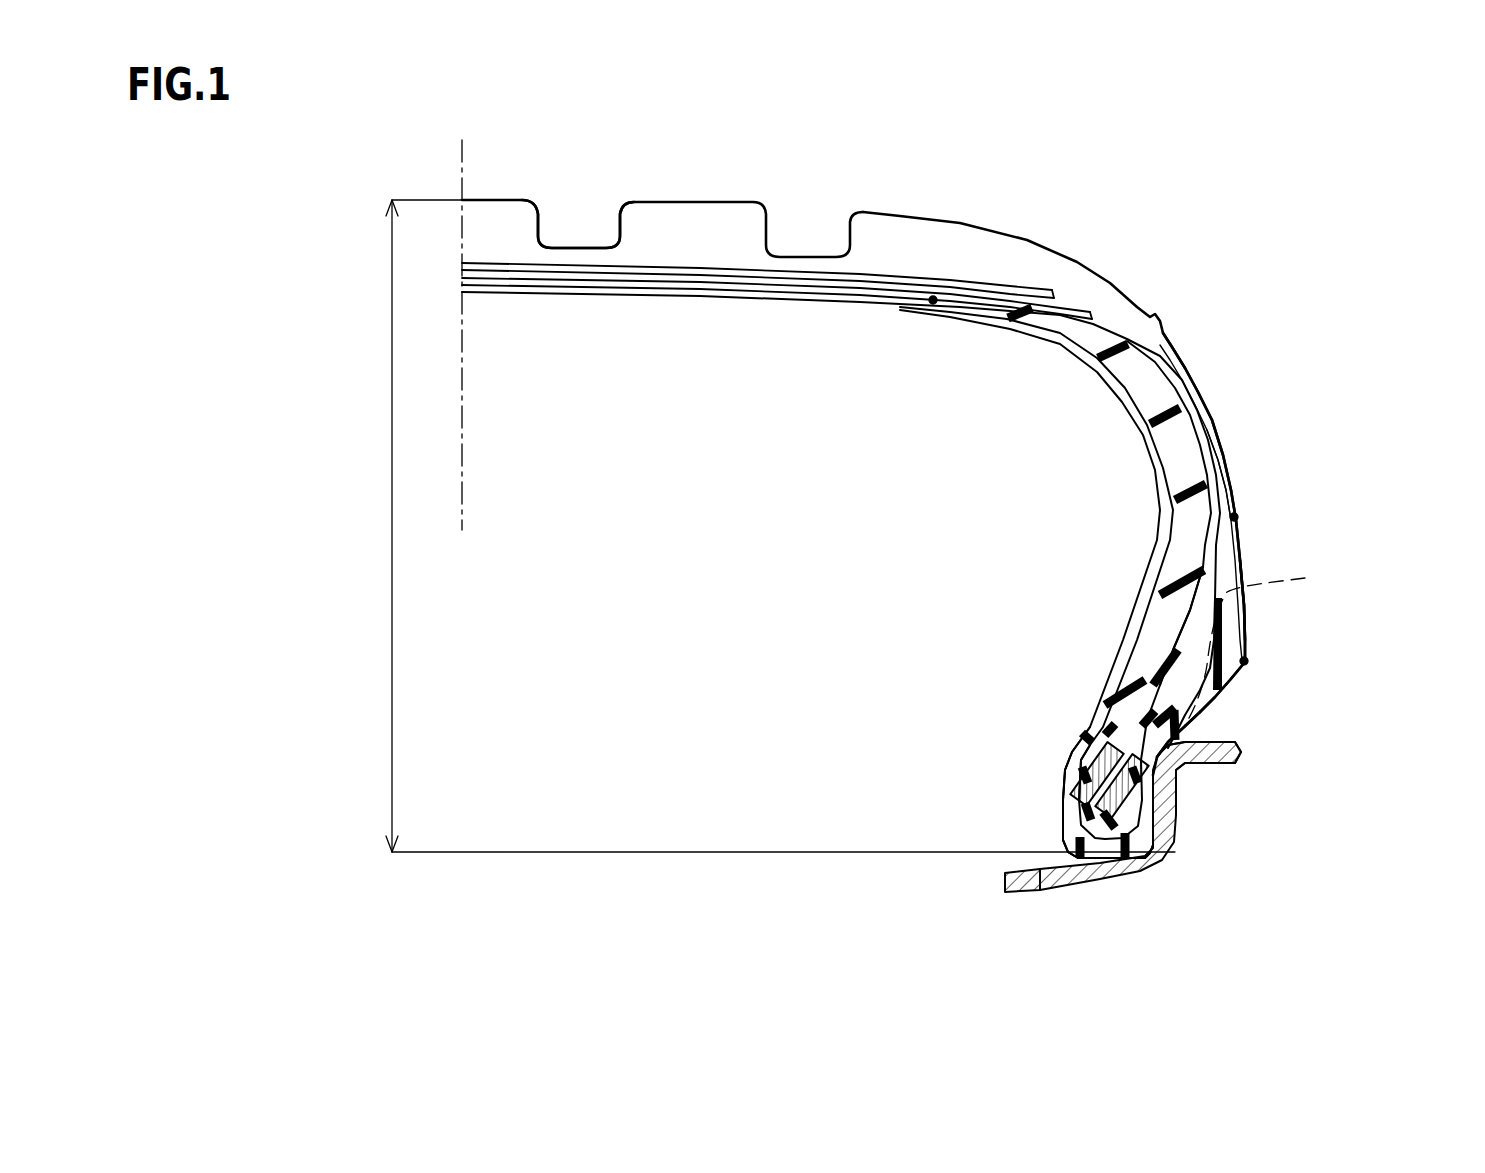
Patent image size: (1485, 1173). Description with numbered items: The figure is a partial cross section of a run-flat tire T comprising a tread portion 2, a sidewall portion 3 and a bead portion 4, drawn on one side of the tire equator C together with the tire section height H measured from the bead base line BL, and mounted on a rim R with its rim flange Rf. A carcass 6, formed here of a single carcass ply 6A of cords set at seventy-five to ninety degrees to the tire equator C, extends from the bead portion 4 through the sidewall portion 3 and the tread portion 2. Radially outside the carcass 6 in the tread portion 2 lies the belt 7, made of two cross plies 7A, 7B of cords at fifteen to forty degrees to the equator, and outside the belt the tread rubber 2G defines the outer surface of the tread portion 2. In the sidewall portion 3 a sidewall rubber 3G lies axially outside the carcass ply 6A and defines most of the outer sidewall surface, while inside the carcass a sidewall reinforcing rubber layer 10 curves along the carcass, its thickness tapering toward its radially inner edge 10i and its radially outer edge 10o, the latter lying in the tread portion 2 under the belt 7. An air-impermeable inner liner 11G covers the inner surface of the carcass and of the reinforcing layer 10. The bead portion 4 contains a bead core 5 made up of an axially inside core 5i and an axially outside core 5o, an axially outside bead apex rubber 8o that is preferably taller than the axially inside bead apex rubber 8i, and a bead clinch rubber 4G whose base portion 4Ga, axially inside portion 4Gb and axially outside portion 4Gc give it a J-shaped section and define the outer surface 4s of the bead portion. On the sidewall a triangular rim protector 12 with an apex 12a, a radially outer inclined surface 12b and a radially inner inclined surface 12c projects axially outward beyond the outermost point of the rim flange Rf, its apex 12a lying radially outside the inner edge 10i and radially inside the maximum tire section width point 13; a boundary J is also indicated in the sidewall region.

The run-flat tire T is at (1197, 180).
The tread portion 2 is at (735, 200).
The tread rubber 2G is at (497, 218).
The sidewall portion 3 is at (1293, 418).
The sidewall rubber 3G is at (1222, 477).
The bead portion 4 is at (997, 678).
The bead clinch rubber 4G is at (1116, 871).
The base portion 4Ga is at (1100, 850).
The axially inside portion 4Gb is at (1010, 868).
The axially outside portion 4Gc is at (1188, 859).
The outer surface of the bead portion 4s is at (1198, 728).
The bead core 5 is at (1126, 785).
The axially inside core 5i is at (1075, 795).
The axially outside core 5o is at (1140, 785).
The carcass 6 is at (909, 565).
The carcass ply 6A is at (1217, 644).
The belt 7 is at (779, 204).
The belt ply 7A is at (1080, 312).
The belt ply 7B is at (963, 285).
The axially inside bead apex rubber 8i is at (1090, 762).
The axially outside bead apex rubber 8o is at (1167, 683).
The sidewall reinforcing rubber layer 10 is at (1183, 458).
The radially inner edge of the sidewall reinforcing rubber layer 10i is at (1080, 738).
The radially outer edge of the sidewall reinforcing rubber layer 10o is at (933, 301).
The inner liner 11G is at (1167, 535).
The rim protector 12 is at (1319, 636).
The apex 12a is at (1247, 661).
The radially outer inclined surface 12b is at (1245, 640).
The radially inner inclined surface 12c is at (1197, 707).
The maximum tire section width point 13 is at (1236, 517).
The boundary line J is at (1261, 639).
The tire equator C is at (462, 318).
The tire section height H is at (411, 526).
The bead base line BL is at (738, 852).
The rim R is at (1164, 829).
The rim flange Rf is at (1185, 790).